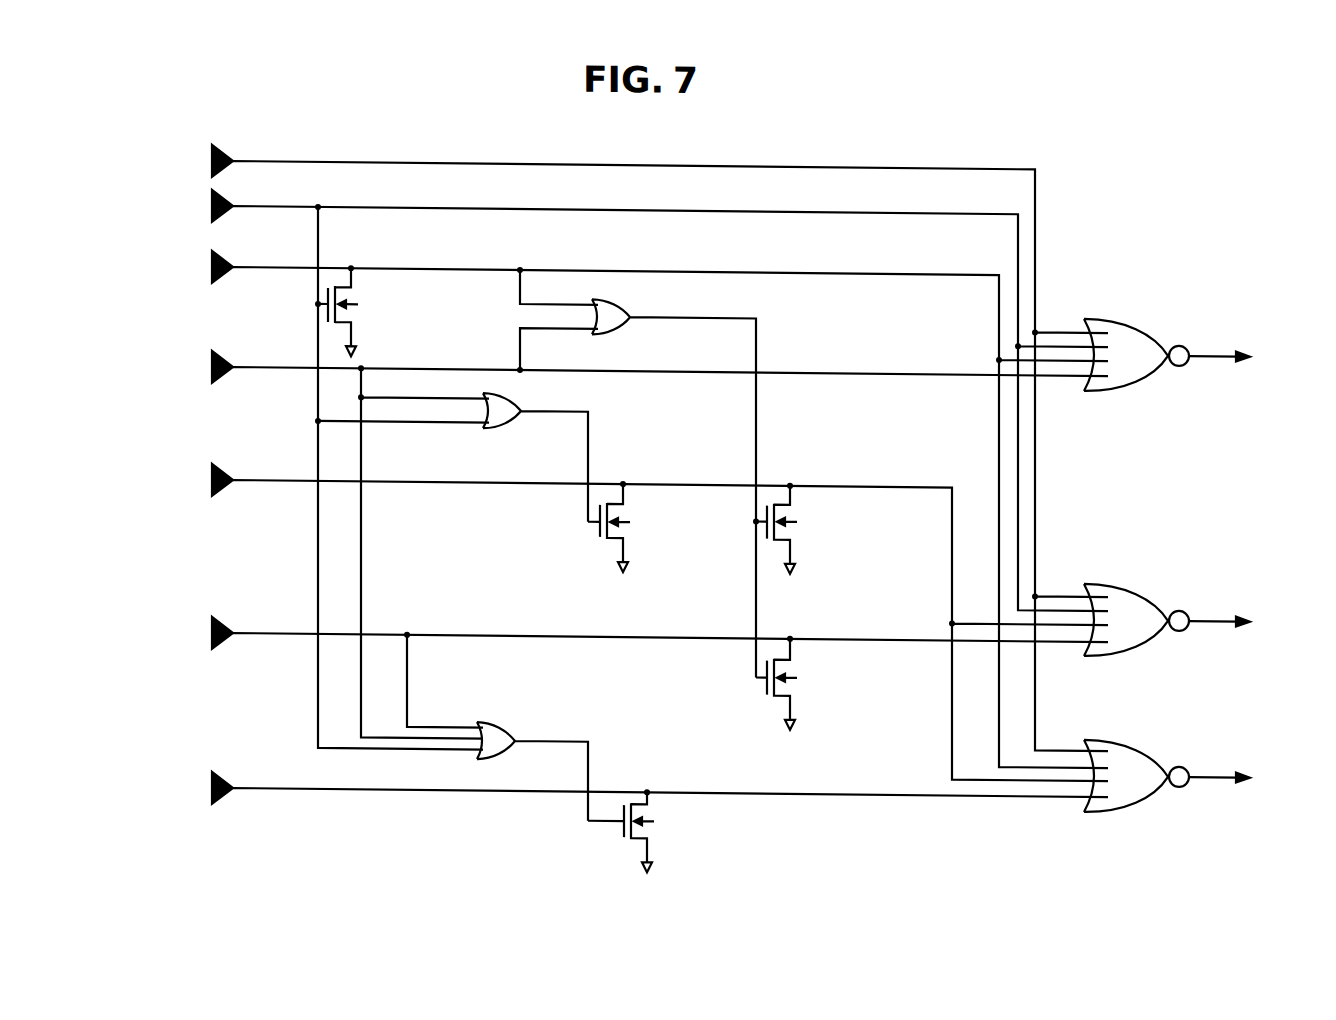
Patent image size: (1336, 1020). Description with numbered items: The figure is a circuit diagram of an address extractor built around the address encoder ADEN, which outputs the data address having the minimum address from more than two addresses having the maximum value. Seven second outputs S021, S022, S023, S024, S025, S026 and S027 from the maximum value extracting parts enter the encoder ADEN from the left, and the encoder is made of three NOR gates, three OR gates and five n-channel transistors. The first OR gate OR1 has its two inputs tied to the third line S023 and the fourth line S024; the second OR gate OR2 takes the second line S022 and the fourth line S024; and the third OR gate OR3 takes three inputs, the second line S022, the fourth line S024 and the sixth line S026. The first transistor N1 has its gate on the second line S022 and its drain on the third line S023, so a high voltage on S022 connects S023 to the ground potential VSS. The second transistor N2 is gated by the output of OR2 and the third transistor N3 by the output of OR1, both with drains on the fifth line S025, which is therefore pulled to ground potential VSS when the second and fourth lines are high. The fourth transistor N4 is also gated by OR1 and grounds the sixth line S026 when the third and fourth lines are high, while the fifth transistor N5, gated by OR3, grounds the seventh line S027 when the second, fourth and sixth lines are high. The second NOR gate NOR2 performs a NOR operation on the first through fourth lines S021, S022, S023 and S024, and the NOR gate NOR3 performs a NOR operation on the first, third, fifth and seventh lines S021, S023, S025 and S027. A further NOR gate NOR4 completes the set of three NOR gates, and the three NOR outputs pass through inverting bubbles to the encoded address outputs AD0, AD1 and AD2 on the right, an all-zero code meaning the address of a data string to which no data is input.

The address encoder ADEN is at (1097, 171).
The 1st second output line S021 is at (628, 447).
The 2nd second output line S022 is at (628, 472).
The 3rd second output line S023 is at (628, 509).
The 4th second output line S024 is at (628, 534).
The 5th second output line S025 is at (628, 622).
The 6th second output line S026 is at (628, 675).
The 7th second output line S027 is at (628, 792).
The first NMOS transistor N1 is at (378, 295).
The second NMOS transistor N2 is at (648, 511).
The third NMOS transistor N3 is at (814, 512).
The fourth NMOS transistor N4 is at (814, 666).
The fifth NMOS transistor N5 is at (654, 835).
The first OR gate OR1 is at (675, 488).
The second OR gate OR2 is at (453, 456).
The third OR gate OR3 is at (532, 771).
The second NOR gate NOR2 is at (1191, 337).
The first NOR gate NOR3 is at (1193, 601).
The NOR gate NOR4 is at (1196, 759).
The address output AD0 is at (1244, 357).
The address output AD1 is at (1245, 622).
The address output AD2 is at (1249, 778).
The ground potential VSS is at (648, 888).